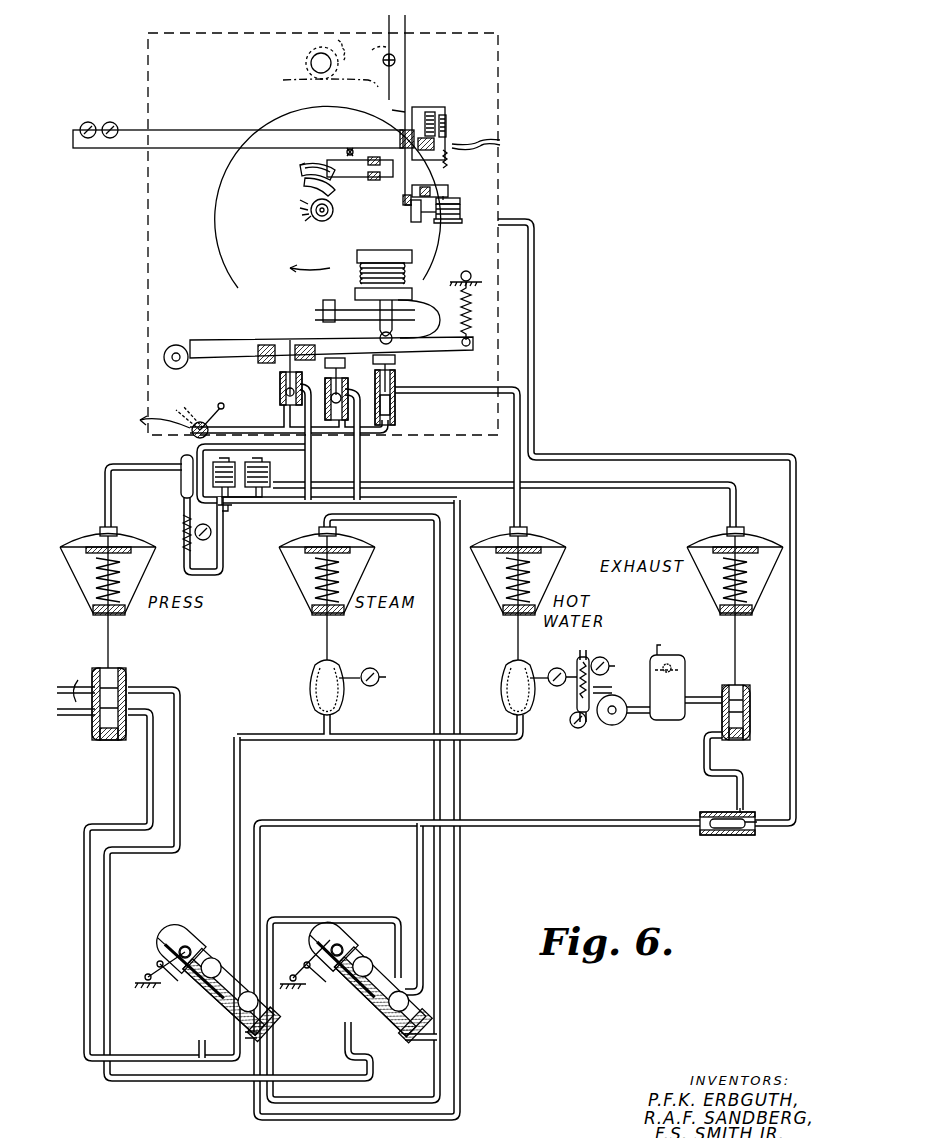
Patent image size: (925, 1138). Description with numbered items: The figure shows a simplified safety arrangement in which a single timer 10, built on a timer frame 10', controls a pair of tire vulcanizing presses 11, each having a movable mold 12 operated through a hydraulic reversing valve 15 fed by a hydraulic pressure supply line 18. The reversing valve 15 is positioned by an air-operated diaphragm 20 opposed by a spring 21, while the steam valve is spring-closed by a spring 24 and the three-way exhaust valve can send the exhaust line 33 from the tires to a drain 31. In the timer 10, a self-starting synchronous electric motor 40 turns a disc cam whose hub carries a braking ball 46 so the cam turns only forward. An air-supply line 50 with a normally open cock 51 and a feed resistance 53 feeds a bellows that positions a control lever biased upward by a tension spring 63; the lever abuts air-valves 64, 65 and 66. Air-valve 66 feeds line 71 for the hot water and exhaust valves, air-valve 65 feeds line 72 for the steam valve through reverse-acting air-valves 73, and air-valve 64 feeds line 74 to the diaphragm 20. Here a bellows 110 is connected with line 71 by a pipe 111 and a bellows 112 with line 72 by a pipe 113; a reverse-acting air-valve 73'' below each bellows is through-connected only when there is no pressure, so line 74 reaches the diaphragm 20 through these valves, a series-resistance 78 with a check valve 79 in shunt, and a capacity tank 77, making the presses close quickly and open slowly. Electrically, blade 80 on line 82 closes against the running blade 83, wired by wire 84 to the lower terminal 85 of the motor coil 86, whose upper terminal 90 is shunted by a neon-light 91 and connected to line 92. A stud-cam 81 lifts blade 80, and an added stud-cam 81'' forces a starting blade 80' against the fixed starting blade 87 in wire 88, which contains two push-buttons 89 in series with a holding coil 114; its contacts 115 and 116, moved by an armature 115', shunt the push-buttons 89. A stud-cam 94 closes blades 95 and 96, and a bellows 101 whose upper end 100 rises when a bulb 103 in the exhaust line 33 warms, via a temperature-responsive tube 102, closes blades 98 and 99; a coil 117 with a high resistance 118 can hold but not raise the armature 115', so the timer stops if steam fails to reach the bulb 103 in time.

The timer 10 is at (336, 234).
The timer frame 10' is at (469, 262).
The tire vulcanizing press 11 is at (202, 945).
The movable mold 12 is at (265, 1022).
The reversing valve 15 is at (126, 680).
The hydraulic pressure supply line 18 is at (342, 694).
The air-operated diaphragm 20 is at (120, 546).
The spring 21 is at (532, 694).
The spring 24 is at (752, 704).
The drain 31 is at (738, 740).
The exhaust line 33 is at (625, 818).
The electric motor 40 is at (305, 63).
The braking ball 46 is at (300, 208).
The air-supply line 50 is at (254, 250).
The cock 51 is at (198, 418).
The feed resistance 53 is at (290, 250).
The tension spring 63 is at (472, 300).
The air-valve 64 is at (298, 370).
The air-valve 65 is at (348, 370).
The air-valve 66 is at (396, 372).
The line 71 is at (418, 391).
The line 72 is at (358, 461).
The reverse-acting air-valve 73 is at (366, 1023).
The reverse-acting air-valve 73'' is at (240, 525).
The line 74 is at (105, 509).
The capacity tank 77 is at (181, 489).
The series-resistance 78 is at (184, 518).
The check valve 79 is at (210, 538).
The blade 80 is at (323, 170).
The blade 80' is at (315, 159).
The stud-cam 81 is at (302, 187).
The stud-cam 81'' is at (284, 157).
The line 82 is at (410, 18).
The running blade 83 is at (374, 180).
The wire 84 is at (392, 109).
The lower terminal 85 is at (372, 86).
The coil 86 is at (345, 45).
The starting blade 87 is at (352, 138).
The wire 88 is at (168, 131).
The push-button 89 is at (90, 122).
The upper terminal 90 is at (377, 41).
The neon-light 91 is at (383, 59).
The line 92 is at (389, 22).
The stud-cam 94 is at (403, 205).
The blade 95 is at (414, 222).
The blade 96 is at (428, 214).
The switch blade 98 is at (465, 185).
The switch blade 99 is at (440, 186).
The upper end of bellows 100 is at (460, 200).
The bellows 101 is at (462, 208).
The temperature-responsive tube 102 is at (503, 220).
The bulb 103 is at (710, 838).
The bellows 110 is at (270, 470).
The pipe 111 is at (342, 500).
The bellows 112 is at (205, 455).
The pipe 113 is at (310, 460).
The holding coil 114 is at (430, 112).
The contact 115 is at (451, 140).
The armature 115' is at (493, 137).
The contact 116 is at (400, 139).
The coil 117 is at (446, 120).
The resistance 118 is at (450, 158).